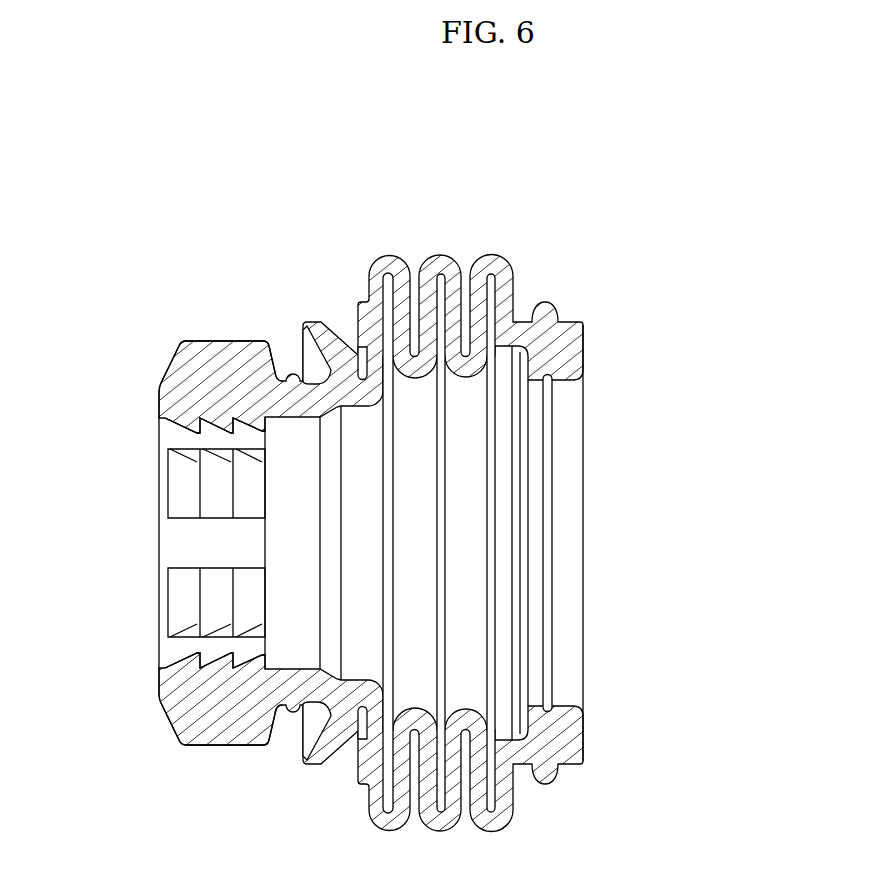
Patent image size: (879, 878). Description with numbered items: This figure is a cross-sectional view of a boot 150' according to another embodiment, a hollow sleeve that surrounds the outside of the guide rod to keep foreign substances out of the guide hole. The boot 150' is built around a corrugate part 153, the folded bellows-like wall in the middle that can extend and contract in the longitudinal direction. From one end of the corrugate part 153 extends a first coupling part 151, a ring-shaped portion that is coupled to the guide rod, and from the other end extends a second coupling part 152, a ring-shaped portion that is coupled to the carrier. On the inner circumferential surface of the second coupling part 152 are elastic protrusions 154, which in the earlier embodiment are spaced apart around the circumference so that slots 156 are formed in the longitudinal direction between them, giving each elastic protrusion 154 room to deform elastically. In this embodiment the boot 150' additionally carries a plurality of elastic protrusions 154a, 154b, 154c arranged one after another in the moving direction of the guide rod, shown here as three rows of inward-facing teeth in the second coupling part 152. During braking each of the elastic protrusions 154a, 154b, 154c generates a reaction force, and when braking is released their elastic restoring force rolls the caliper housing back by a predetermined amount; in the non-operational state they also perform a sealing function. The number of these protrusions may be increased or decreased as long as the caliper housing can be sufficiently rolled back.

The boot 150' is at (371, 493).
The first coupling part 151 is at (571, 332).
The second coupling part 152 is at (146, 373).
The corrugate part 153 is at (437, 265).
The elastic protrusion 154 is at (200, 353).
The elastic protrusion 154a is at (185, 432).
The elastic protrusion 154b is at (175, 451).
The elastic protrusion 154c is at (190, 467).
The slot 156 is at (232, 553).